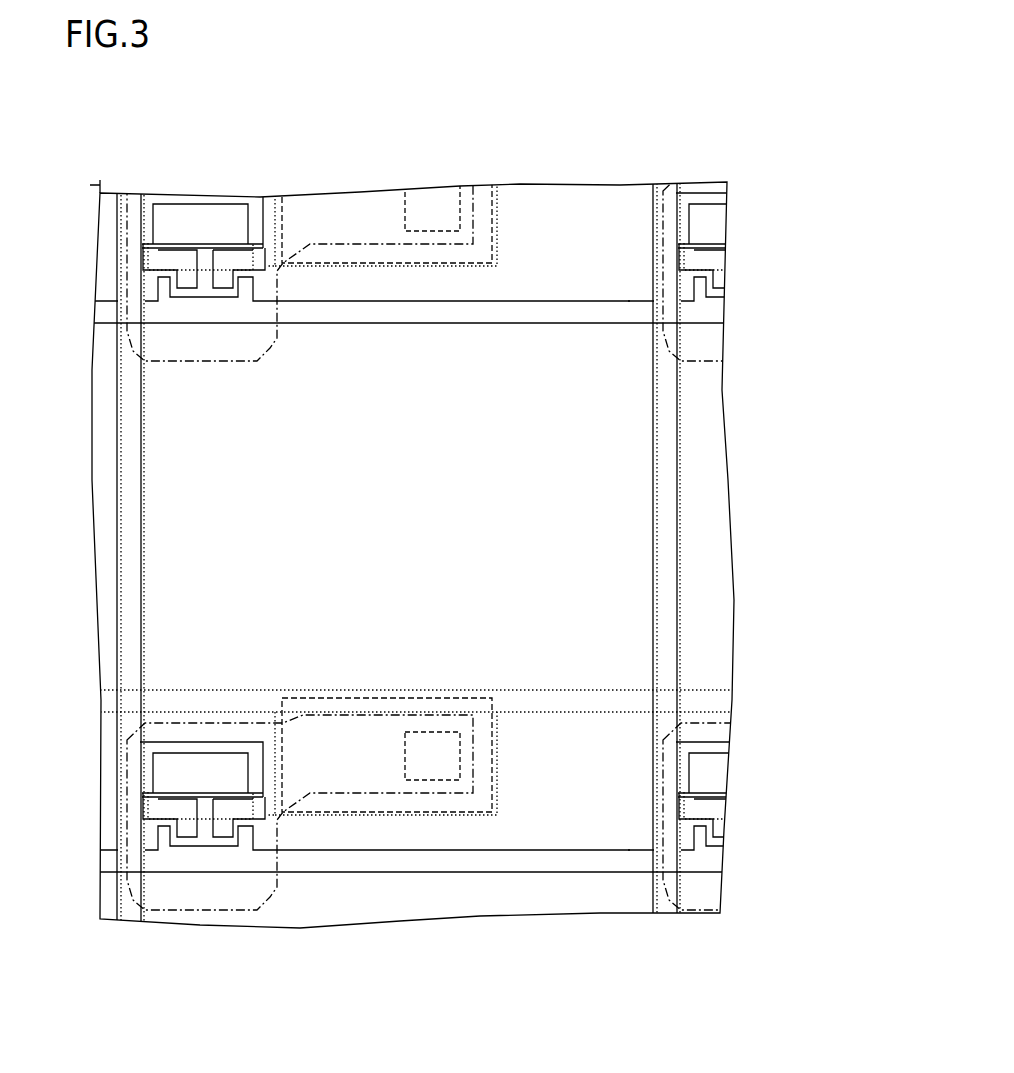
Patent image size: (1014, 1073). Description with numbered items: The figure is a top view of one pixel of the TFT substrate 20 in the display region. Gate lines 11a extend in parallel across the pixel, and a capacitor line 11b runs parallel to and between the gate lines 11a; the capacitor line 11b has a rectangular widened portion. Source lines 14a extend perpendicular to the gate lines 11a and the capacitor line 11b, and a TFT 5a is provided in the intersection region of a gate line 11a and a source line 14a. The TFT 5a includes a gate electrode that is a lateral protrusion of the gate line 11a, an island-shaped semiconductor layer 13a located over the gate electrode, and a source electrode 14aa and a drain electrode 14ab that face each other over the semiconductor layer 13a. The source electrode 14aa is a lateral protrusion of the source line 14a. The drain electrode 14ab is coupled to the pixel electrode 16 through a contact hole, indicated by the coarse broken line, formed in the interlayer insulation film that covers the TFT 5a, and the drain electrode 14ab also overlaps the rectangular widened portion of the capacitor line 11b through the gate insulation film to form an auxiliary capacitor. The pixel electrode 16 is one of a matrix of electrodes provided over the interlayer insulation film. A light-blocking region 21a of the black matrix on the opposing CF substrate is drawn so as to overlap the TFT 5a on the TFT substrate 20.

The TFT substrate 20 is at (148, 158).
The source line 14a is at (125, 402).
The source electrode 14aa is at (185, 822).
The drain electrode 14ab is at (222, 822).
The semiconductor layer 13a is at (198, 838).
The TFT 5a is at (229, 850).
The pixel electrode 16 is at (517, 843).
The gate line 11a is at (623, 868).
The capacitor line 11b is at (722, 702).
The light-blocking region 21a is at (237, 910).